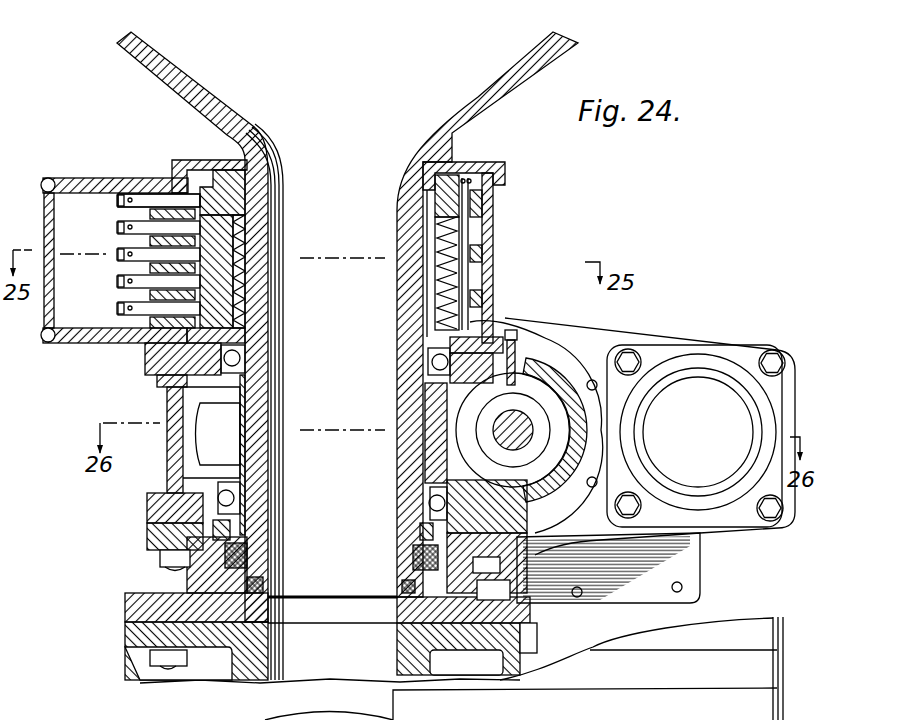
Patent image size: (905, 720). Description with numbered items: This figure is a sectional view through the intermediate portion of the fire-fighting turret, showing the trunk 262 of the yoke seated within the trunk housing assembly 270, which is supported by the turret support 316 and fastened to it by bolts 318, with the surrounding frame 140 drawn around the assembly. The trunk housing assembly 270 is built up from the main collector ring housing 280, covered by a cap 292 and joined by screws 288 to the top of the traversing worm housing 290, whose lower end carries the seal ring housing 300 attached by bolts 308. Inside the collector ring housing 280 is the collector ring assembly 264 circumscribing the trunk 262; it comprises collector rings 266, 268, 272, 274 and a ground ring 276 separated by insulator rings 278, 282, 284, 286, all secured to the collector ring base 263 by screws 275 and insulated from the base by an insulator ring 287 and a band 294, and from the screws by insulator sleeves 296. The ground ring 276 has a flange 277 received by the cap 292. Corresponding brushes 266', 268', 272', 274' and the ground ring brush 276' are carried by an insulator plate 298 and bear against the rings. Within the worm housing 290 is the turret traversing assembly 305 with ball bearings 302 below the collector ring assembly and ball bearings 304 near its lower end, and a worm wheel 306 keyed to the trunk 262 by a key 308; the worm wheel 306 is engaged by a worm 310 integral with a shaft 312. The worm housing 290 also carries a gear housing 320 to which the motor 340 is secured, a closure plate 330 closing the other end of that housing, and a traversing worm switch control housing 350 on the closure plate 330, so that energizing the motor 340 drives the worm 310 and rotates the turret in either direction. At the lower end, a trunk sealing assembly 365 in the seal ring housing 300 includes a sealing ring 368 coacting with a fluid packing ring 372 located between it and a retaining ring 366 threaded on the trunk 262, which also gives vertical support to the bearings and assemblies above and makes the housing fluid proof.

The frame 140 is at (475, 101).
The trunk 262 is at (396, 298).
The collector ring base 263 is at (250, 334).
The collector ring assembly 264 is at (213, 185).
The collector ring 266 is at (518, 217).
The brush 266' is at (131, 229).
The collector ring 268 is at (493, 252).
The brush 268' is at (130, 264).
The trunk housing assembly 270 is at (110, 407).
The collector ring 272 is at (489, 287).
The brush 272' is at (130, 289).
The collector ring 274 is at (500, 311).
The brush 274' is at (131, 314).
The screws 275 is at (487, 172).
The ground ring 276 is at (510, 244).
The ground ring brush 276' is at (131, 202).
The flange 277 is at (447, 168).
The insulator ring 278 is at (494, 208).
The main collector ring housing 280 is at (138, 158).
The insulator ring 282 is at (482, 236).
The insulator ring 284 is at (482, 258).
The insulator ring 286 is at (482, 298).
The insulator ring 287 is at (506, 320).
The screws 288 is at (160, 382).
The traversing worm housing 290 is at (165, 482).
The cap 292 is at (178, 160).
The band 294 is at (236, 250).
The insulator sleeves 296 is at (437, 223).
The insulator plate 298 is at (150, 343).
The seal ring housing 300 is at (187, 587).
The ball bearings 302 is at (245, 358).
The ball bearings 304 is at (218, 505).
The turret traversing assembly 305 is at (222, 458).
The worm wheel 306 is at (186, 418).
The key 308 is at (160, 560).
The worm 310 is at (552, 470).
The shaft 312 is at (520, 508).
The turret support 316 is at (126, 648).
The bolts 318 is at (152, 665).
The gear housing 320 is at (608, 345).
The closure plate 330 is at (686, 668).
The motor 340 is at (696, 436).
The traversing worm switch control housing 350 is at (716, 633).
The trunk sealing assembly 365 is at (413, 560).
The retaining ring 366 is at (213, 530).
The sealing ring 368 is at (265, 584).
The fluid packing ring 372 is at (249, 556).